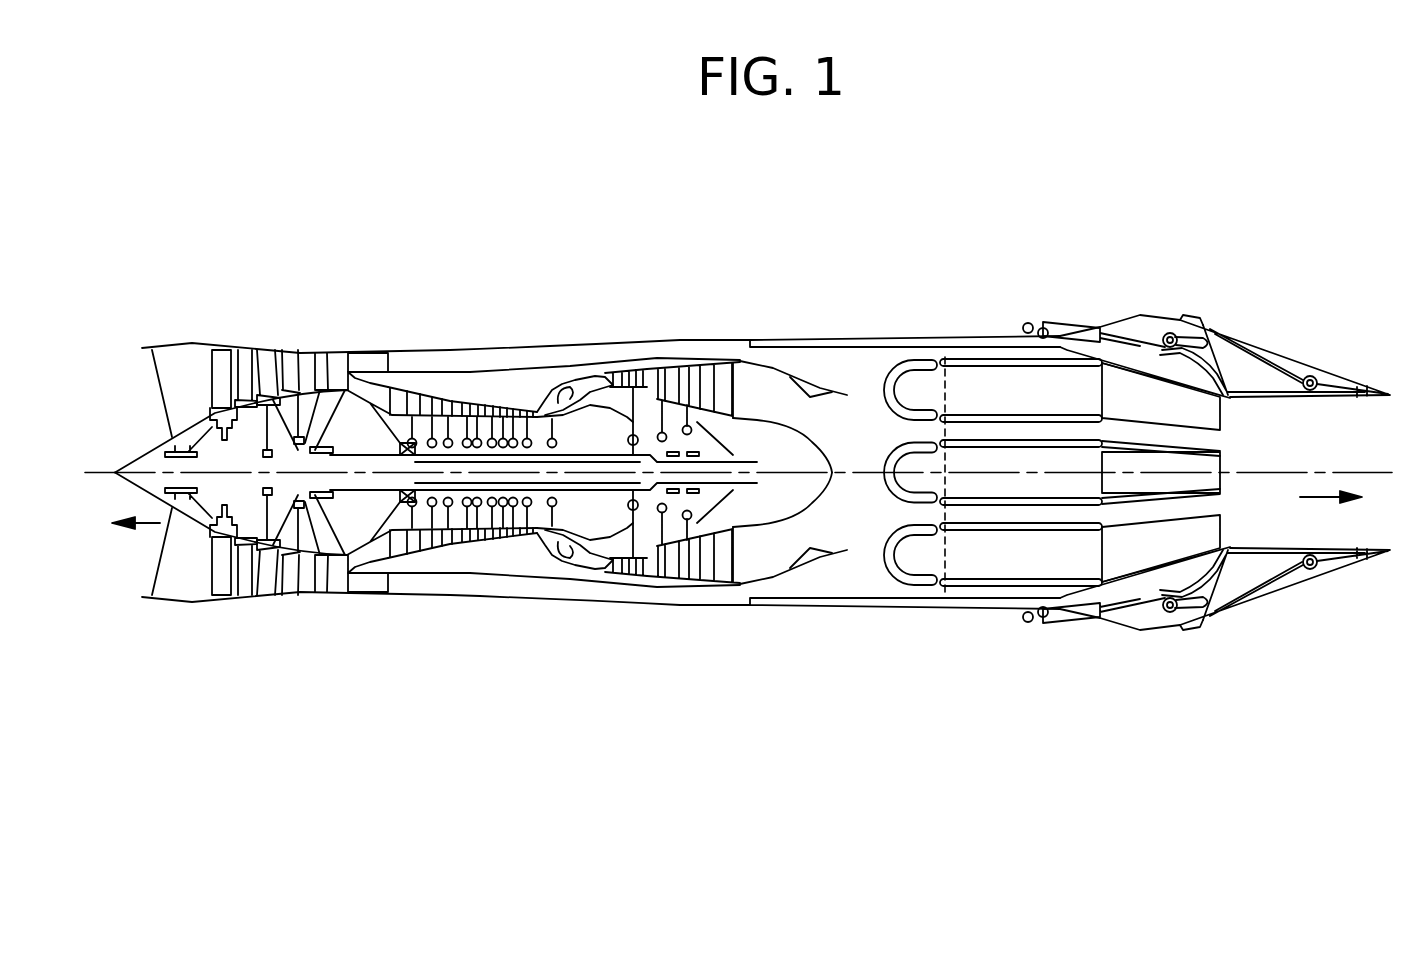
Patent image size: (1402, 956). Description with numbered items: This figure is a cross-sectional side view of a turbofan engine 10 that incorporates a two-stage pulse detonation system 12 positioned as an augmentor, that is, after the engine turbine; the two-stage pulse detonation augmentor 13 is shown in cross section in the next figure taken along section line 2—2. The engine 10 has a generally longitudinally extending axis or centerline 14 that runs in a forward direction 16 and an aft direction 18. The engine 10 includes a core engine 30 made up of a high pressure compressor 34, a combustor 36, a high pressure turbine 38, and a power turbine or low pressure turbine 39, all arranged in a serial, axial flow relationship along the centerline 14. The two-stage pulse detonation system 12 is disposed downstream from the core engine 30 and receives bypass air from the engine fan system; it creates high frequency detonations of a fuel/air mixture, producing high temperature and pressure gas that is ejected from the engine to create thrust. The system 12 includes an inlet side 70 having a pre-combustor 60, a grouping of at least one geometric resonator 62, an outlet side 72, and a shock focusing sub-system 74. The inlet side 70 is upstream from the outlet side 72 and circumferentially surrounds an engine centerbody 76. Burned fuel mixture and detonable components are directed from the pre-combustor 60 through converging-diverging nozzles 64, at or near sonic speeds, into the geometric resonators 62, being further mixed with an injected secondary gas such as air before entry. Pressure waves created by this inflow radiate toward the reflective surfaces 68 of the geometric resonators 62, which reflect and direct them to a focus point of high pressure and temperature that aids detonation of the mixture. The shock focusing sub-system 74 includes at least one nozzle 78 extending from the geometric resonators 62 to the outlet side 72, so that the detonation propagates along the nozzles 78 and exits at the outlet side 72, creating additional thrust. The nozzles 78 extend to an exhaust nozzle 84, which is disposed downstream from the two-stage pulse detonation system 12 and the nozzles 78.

The section line 2— 2 is at (955, 317).
The turbofan engine 10 is at (233, 308).
The two-stage pulse detonation system 12 is at (989, 241).
The two-stage pulse detonation augmentor 13 is at (990, 383).
The centerline 14 is at (130, 448).
The forward direction 16 is at (140, 527).
The aft direction 18 is at (1318, 498).
The core engine 30 is at (476, 616).
The high pressure compressor 34 is at (480, 403).
The combustor 36 is at (583, 383).
The high pressure turbine 38 is at (630, 372).
The low pressure turbine 39 is at (663, 366).
The pre-combustor 60 is at (840, 376).
The geometric resonator 62 is at (917, 360).
The converging-diverging nozzles 64 is at (935, 530).
The reflective surfaces 68 is at (913, 563).
The inlet side 70 is at (853, 540).
The outlet side 72 is at (1220, 462).
The shock focusing sub-system 74 is at (919, 585).
The engine centerbody 76 is at (757, 540).
The nozzle 78 is at (1077, 367).
The exhaust nozzle 84 is at (1303, 352).